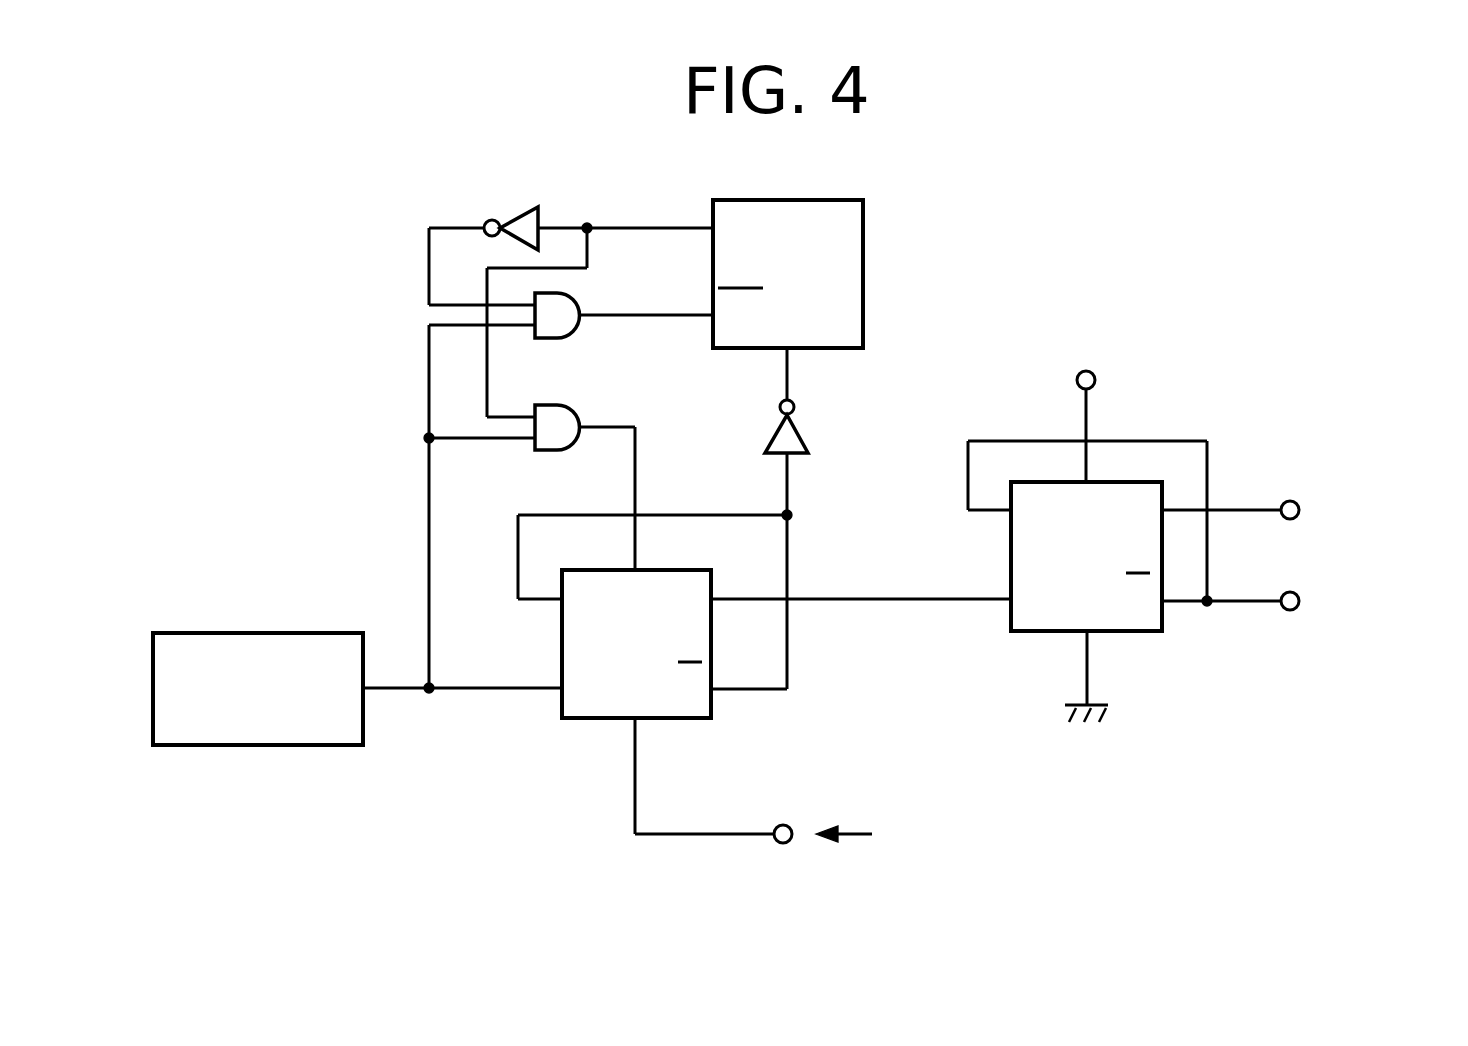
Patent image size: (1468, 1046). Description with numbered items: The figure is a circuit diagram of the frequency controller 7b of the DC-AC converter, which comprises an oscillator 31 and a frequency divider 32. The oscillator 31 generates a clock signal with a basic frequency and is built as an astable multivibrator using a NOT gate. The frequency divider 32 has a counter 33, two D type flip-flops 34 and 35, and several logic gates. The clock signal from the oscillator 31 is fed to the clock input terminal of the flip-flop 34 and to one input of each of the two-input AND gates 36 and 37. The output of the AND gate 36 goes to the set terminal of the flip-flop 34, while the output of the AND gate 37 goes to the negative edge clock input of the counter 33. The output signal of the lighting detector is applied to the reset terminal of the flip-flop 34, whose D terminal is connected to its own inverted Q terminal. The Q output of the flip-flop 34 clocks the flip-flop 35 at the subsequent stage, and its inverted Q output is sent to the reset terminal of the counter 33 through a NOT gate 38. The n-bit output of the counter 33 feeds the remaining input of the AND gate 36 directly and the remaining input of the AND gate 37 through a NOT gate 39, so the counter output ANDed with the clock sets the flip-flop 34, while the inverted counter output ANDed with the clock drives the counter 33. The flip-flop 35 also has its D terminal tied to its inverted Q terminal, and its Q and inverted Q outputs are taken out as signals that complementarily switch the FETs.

The frequency controller 7b is at (588, 148).
The oscillator 31 is at (293, 745).
The frequency divider 32 is at (562, 758).
The counter 33 is at (863, 225).
The D type flip-flop 34 is at (711, 712).
The D type flip-flop 35 is at (1143, 631).
The AND gate 36 is at (573, 407).
The AND gate 37 is at (578, 297).
The NOT gate 38 is at (800, 430).
The NOT gate 39 is at (520, 213).